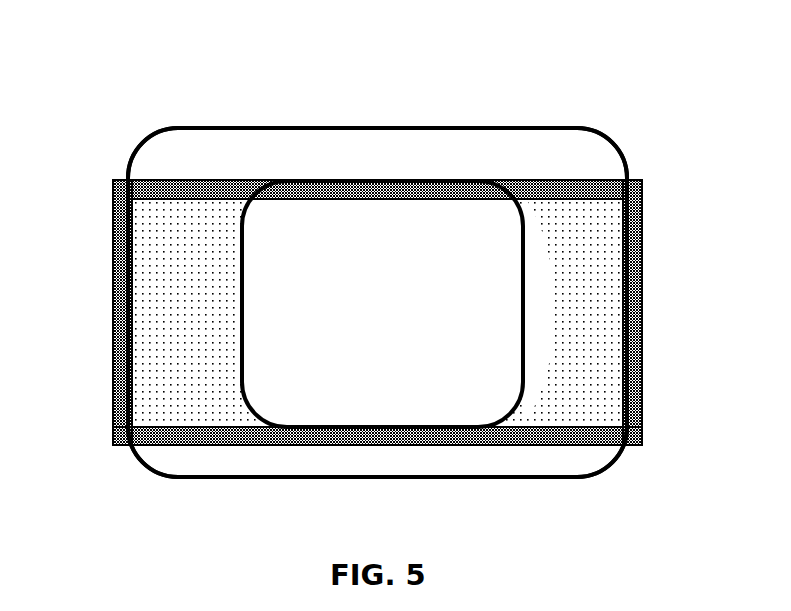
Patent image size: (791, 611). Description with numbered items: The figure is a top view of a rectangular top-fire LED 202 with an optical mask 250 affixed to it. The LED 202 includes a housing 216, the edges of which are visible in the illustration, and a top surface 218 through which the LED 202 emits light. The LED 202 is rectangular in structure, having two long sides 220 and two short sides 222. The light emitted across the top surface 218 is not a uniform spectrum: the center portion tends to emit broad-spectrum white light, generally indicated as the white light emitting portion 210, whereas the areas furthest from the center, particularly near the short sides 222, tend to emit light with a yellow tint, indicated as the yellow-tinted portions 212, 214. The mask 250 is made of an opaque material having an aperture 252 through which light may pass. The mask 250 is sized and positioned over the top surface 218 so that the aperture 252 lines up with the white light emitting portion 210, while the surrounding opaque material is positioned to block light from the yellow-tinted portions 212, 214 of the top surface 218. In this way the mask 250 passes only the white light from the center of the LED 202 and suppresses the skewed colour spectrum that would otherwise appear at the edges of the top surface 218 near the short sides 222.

The top-fire LED 202 is at (715, 117).
The white light emitting portion 210 is at (392, 313).
The yellow-tinted portion 212 is at (187, 316).
The yellow-tinted portion 214 is at (603, 365).
The housing 216 is at (598, 440).
The top surface 218 is at (303, 228).
The long sides 220 is at (560, 180).
The short sides 222 is at (113, 298).
The mask 250 is at (430, 128).
The aperture 252 is at (523, 333).